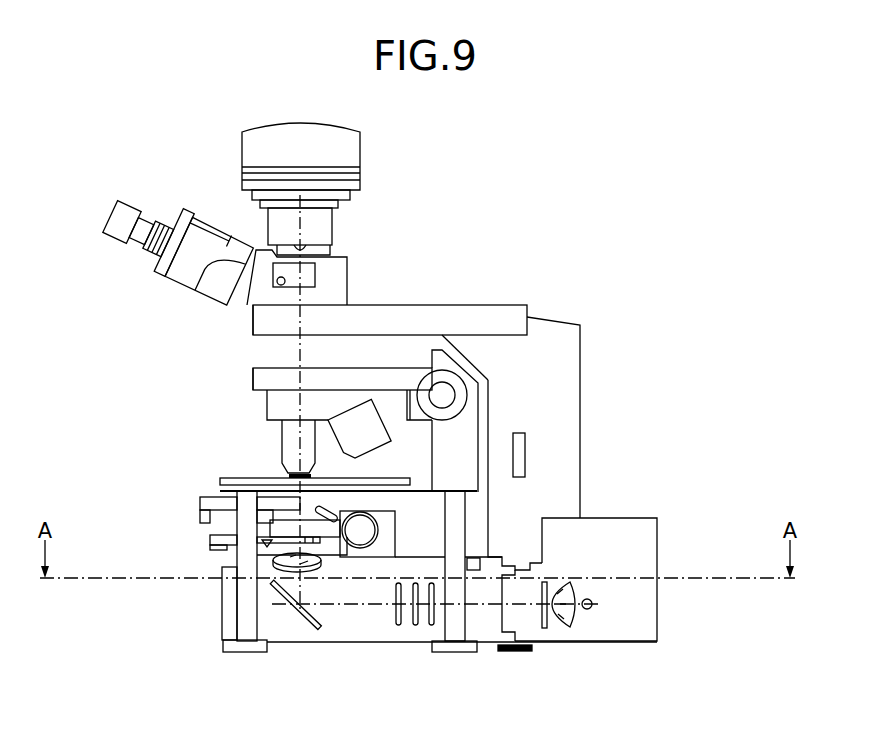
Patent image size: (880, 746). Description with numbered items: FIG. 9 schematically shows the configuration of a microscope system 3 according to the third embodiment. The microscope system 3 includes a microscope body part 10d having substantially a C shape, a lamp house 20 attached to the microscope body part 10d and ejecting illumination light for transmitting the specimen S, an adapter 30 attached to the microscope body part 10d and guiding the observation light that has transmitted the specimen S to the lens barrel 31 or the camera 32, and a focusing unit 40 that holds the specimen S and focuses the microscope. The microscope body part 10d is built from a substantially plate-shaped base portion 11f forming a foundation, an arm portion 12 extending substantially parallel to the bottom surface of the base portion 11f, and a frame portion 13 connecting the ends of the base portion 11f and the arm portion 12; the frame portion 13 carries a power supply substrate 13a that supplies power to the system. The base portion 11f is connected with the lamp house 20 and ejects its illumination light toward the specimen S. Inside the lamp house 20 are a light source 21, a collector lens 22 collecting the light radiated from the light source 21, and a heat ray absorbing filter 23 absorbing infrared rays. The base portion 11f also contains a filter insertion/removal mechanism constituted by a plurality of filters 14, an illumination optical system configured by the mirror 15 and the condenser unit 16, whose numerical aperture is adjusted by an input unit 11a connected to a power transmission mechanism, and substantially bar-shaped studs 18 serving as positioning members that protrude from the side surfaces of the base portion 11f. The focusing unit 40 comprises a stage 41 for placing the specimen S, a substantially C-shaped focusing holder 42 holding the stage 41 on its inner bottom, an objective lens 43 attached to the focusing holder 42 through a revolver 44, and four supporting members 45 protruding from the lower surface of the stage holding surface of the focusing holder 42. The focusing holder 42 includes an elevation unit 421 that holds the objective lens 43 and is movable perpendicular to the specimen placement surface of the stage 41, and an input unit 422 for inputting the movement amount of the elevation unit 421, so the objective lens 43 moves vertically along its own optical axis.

The microscope system 3 is at (479, 172).
The camera 32 is at (352, 147).
The lens barrel 31 is at (200, 212).
The adapter 30 is at (337, 268).
The arm portion 12 is at (443, 313).
The microscope body part 10d is at (557, 306).
The frame portion 13 is at (562, 487).
The power supply substrate 13a is at (528, 455).
The focusing holder 42 is at (470, 422).
The input unit 422 is at (470, 393).
The focusing unit 40 is at (185, 421).
The elevation unit 421 is at (265, 373).
The revolver 44 is at (276, 403).
The objective lens 43 is at (290, 430).
The specimen S is at (290, 478).
The stage 41 is at (218, 480).
The condenser unit 16 is at (180, 522).
The input unit 11a is at (384, 530).
The mirror 15 is at (298, 632).
The filters 14 is at (431, 626).
The supporting members 45 is at (240, 600).
The base portion 11f is at (360, 643).
The studs 18 is at (476, 556).
The lamp house 20 is at (645, 535).
The heat ray absorbing filter 23 is at (550, 630).
The light source 21 is at (590, 586).
The collector lens 22 is at (576, 617).